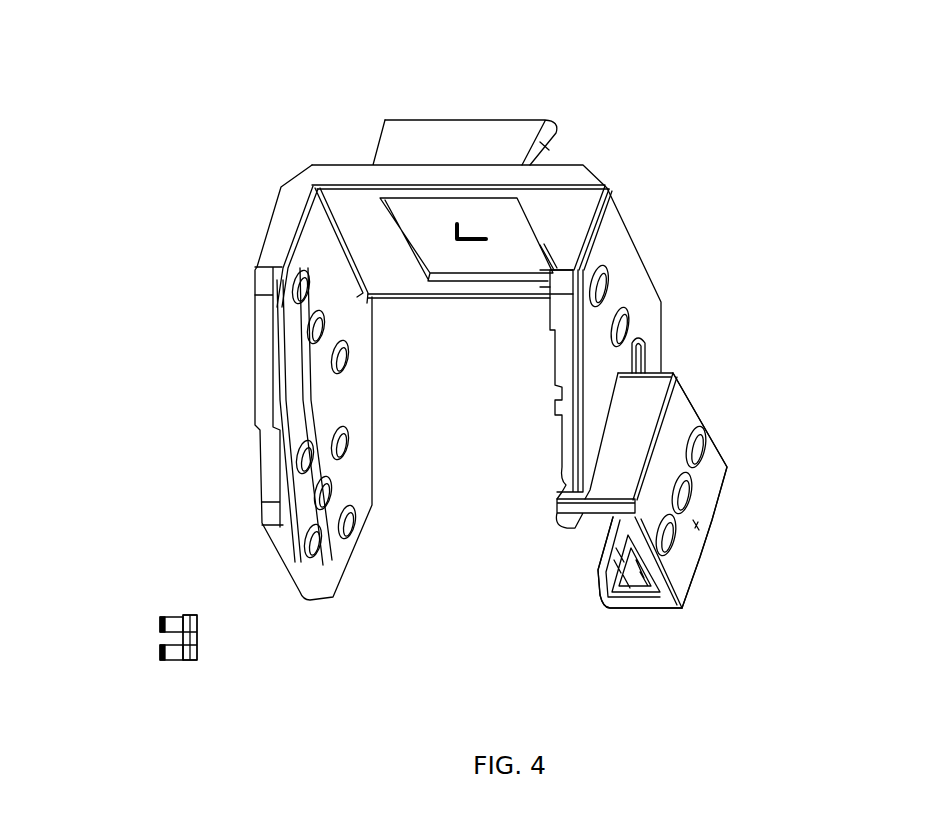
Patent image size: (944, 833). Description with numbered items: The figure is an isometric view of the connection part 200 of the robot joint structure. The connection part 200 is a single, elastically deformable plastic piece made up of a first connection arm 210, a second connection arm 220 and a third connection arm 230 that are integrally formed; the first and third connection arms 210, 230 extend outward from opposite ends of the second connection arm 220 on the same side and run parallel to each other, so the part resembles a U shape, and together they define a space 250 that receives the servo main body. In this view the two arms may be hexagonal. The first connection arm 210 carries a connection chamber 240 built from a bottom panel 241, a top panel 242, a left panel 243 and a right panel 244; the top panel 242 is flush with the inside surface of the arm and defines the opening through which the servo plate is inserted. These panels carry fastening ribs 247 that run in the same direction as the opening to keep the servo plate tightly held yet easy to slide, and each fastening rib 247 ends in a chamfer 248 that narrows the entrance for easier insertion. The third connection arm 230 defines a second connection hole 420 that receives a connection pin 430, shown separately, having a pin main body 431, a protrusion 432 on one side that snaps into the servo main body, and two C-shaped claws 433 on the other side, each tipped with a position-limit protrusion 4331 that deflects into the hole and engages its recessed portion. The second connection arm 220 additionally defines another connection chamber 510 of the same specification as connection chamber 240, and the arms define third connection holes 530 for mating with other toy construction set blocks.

The connection part 200 is at (461, 42).
The connection chamber 510 is at (488, 142).
The second connection arm 220 is at (548, 213).
The first connection arm 210 is at (653, 278).
The third connection hole 530 is at (640, 295).
The third connection arm 230 is at (327, 267).
The space 250 is at (425, 382).
The second connection hole 420 is at (320, 497).
The connection chamber 240 is at (787, 312).
The bottom panel 241 is at (697, 557).
The top panel 242 is at (623, 480).
The left panel 243 is at (705, 540).
The right panel 244 is at (647, 457).
The fastening rib 247 is at (598, 600).
The chamfer 248 is at (628, 608).
The connection pin 430 is at (122, 565).
The pin main body 431 is at (183, 630).
The protrusion 432 is at (190, 617).
The claw 433 is at (163, 648).
The position-limit protrusion 4331 is at (163, 655).